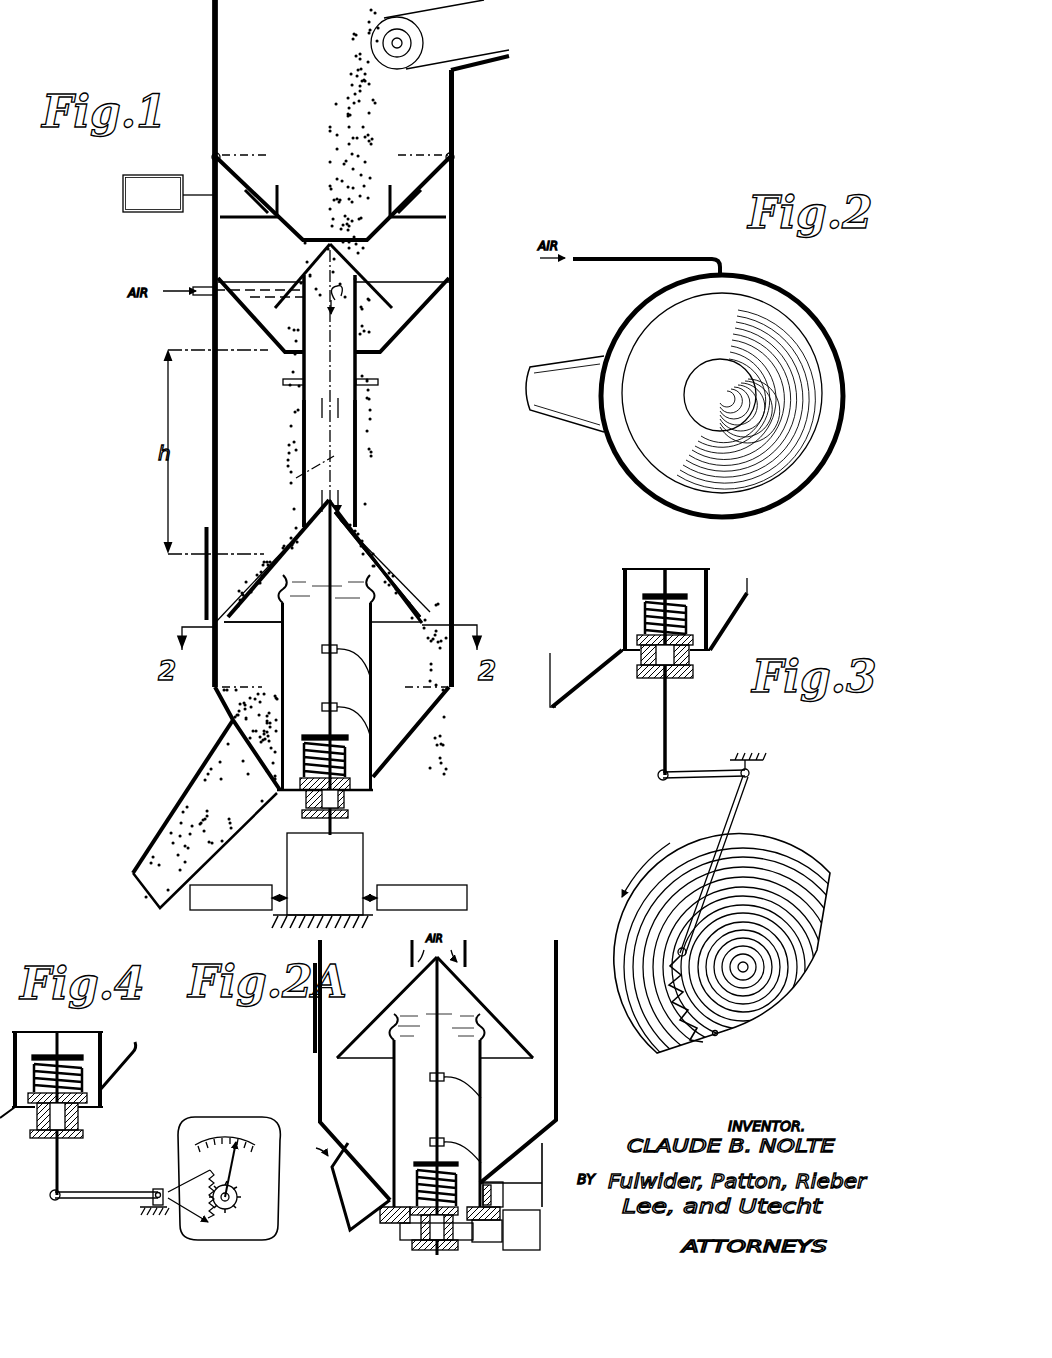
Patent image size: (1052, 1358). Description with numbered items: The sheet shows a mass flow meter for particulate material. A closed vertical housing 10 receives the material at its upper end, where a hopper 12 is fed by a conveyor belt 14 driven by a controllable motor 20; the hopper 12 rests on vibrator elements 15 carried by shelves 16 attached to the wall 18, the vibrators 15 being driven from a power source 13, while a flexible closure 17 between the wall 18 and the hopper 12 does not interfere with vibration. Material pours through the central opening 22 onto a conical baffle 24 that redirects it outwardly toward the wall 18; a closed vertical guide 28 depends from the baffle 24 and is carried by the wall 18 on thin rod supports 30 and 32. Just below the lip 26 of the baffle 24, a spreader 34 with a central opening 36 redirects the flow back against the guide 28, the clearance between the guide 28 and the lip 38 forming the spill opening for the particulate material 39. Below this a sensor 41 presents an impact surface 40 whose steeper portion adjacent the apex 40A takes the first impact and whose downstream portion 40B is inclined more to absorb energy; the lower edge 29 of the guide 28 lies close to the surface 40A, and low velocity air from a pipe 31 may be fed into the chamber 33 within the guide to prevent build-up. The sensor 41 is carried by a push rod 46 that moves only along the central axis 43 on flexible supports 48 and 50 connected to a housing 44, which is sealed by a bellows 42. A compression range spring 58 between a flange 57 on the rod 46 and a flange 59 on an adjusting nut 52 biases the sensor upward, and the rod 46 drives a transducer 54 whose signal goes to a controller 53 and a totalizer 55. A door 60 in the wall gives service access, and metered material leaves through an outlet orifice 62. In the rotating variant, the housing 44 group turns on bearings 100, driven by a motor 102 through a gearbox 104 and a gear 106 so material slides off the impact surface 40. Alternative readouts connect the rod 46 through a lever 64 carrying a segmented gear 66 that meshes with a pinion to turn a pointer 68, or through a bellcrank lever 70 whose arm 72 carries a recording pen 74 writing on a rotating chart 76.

In FIG. 1, the housing 10 is at (456, 278).
In FIG. 1, the hopper 12 is at (456, 140).
In FIG. 1, the power source 13 is at (127, 214).
In FIG. 1, the conveyor belt 14 is at (488, 46).
In FIG. 1, the vibrator elements 15 is at (262, 196).
In FIG. 1, the shelves 16 is at (455, 226).
In FIG. 1, the closure 17 is at (458, 160).
In FIG. 1, the wall 18 is at (456, 288).
In FIG. 2A, the wall 18 is at (558, 1024).
In FIG. 1, the controllable motor 20 is at (425, 46).
In FIG. 1, the central opening 22 is at (302, 272).
In FIG. 1, the baffle 24 is at (378, 272).
In FIG. 1, the lip 26 is at (268, 292).
In FIG. 1, the vertical guide 28 is at (298, 448).
In FIG. 1, the lower edge 29 is at (358, 542).
In FIG. 1, the rod support 30 is at (292, 386).
In FIG. 1, the pipe 31 is at (190, 300).
In FIG. 2, the pipe 31 is at (638, 254).
In FIG. 1, the rod support 32 is at (372, 386).
In FIG. 1, the chamber within the vertical guide 33 is at (329, 401).
In FIG. 1, the spreader 34 is at (402, 315).
In FIG. 1, the central opening 36 is at (295, 340).
In FIG. 1, the lip 38 is at (382, 354).
In FIG. 1, the particulate material 39 is at (372, 466).
In FIG. 2A, the particulate material 39 is at (470, 953).
In FIG. 1, the impact surface 40 is at (392, 585).
In FIG. 2, the impact surface 40 is at (795, 340).
In FIG. 1, the apex surface 40A is at (388, 572).
In FIG. 2, the apex surface 40A is at (755, 343).
In FIG. 1, the downstream surface 40B is at (422, 600).
In FIG. 2, the downstream surface 40B is at (812, 385).
In FIG. 1, the sensor 41 is at (298, 556).
In FIG. 2A, the sensor 41 is at (490, 1076).
In FIG. 1, the bellows 42 is at (288, 600).
In FIG. 1, the central axis 43 is at (298, 478).
In FIG. 1, the housing 44 is at (373, 666).
In FIG. 2A, the housing 44 is at (483, 1085).
In FIG. 1, the push rod 46 is at (326, 556).
In FIG. 3, the push rod 46 is at (668, 730).
In FIG. 4, the push rod 46 is at (57, 1160).
In FIG. 2A, the push rod 46 is at (440, 1072).
In FIG. 1, the flexible support 48 is at (320, 650).
In FIG. 2A, the flexible support 48 is at (432, 1076).
In FIG. 1, the flexible support 50 is at (356, 702).
In FIG. 2A, the flexible support 50 is at (430, 1148).
In FIG. 1, the adjusting nut 52 is at (350, 816).
In FIG. 3, the adjusting nut 52 is at (686, 680).
In FIG. 4, the adjusting nut 52 is at (65, 1138).
In FIG. 2A, the adjusting nut 52 is at (414, 1246).
In FIG. 1, the controller 53 is at (442, 884).
In FIG. 1, the transducer 54 is at (363, 866).
In FIG. 1, the totalizer 55 is at (255, 870).
In FIG. 1, the flange 57 is at (311, 735).
In FIG. 3, the flange 57 is at (690, 600).
In FIG. 4, the flange 57 is at (86, 1060).
In FIG. 2A, the flange 57 is at (460, 1168).
In FIG. 1, the compression range spring 58 is at (350, 784).
In FIG. 3, the compression range spring 58 is at (690, 630).
In FIG. 4, the compression range spring 58 is at (80, 1068).
In FIG. 2A, the compression range spring 58 is at (408, 1206).
In FIG. 1, the flange 59 is at (352, 800).
In FIG. 3, the flange 59 is at (693, 652).
In FIG. 4, the flange 59 is at (85, 1098).
In FIG. 2A, the flange 59 is at (490, 1205).
In FIG. 1, the door 60 is at (205, 566).
In FIG. 4, the door 60 is at (232, 1188).
In FIG. 2A, the door 60 is at (314, 1040).
In FIG. 1, the outlet orifice 62 is at (225, 816).
In FIG. 2, the outlet orifice 62 is at (537, 428).
In FIG. 2A, the outlet orifice 62 is at (350, 1190).
In FIG. 4, the lever 64 is at (100, 1190).
In FIG. 4, the segmented gear 66 is at (212, 1220).
In FIG. 4, the pointer 68 is at (215, 1176).
In FIG. 3, the bellcrank lever 70 is at (716, 752).
In FIG. 3, the arm 72 is at (752, 802).
In FIG. 3, the recording pen 74 is at (676, 954).
In FIG. 3, the rotating chart 76 is at (800, 857).
In FIG. 2A, the bearings 100 is at (402, 1223).
In FIG. 2A, the motor 102 is at (540, 1246).
In FIG. 2A, the gearbox 104 is at (518, 1218).
In FIG. 2A, the gear 106 is at (400, 1245).